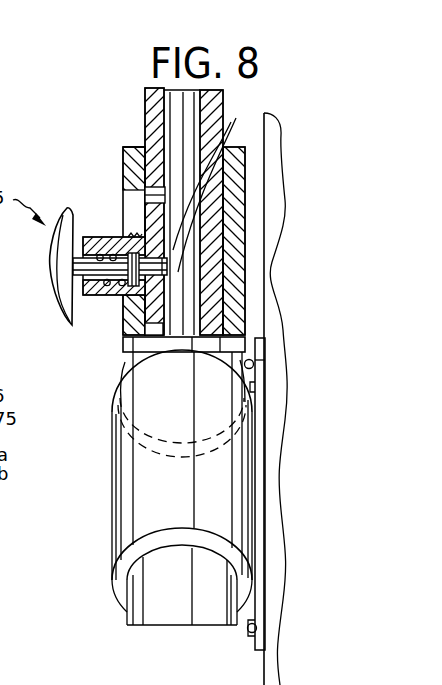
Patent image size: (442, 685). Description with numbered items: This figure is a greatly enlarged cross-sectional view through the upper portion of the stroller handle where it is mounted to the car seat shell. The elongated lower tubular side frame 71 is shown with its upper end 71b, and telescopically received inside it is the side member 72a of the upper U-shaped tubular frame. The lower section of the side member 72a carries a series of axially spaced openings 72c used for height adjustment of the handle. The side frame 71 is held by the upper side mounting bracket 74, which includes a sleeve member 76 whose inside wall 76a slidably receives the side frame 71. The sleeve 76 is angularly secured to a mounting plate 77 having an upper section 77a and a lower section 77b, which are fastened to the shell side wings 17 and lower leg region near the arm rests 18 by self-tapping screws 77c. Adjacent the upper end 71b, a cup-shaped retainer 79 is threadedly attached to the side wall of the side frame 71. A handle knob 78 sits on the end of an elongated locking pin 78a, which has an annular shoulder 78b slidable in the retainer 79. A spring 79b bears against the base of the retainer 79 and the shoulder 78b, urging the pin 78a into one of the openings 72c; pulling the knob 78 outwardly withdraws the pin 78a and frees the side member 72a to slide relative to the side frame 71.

The side wings 17 is at (273, 270).
The arm rests 18 is at (38, 684).
The tubular side frame 71 is at (123, 328).
The upper end of side frame 71b is at (126, 147).
The side member 72a is at (143, 101).
The axially spaced openings 72c is at (236, 124).
The upper side mounting bracket 74 is at (99, 552).
The sleeve member 76 is at (125, 498).
The inside wall 76a is at (133, 573).
The mounting plate 77 is at (278, 458).
The upper section of mounting plate 77a is at (257, 386).
The lower section of mounting plate 77b is at (258, 629).
The self-tapping screws 77c is at (254, 367).
The handle knob 78 is at (50, 267).
The locking pin 78a is at (153, 338).
The annular shoulder 78b is at (144, 195).
The cup-shaped retainer 79 is at (68, 207).
The spring 79b is at (108, 236).